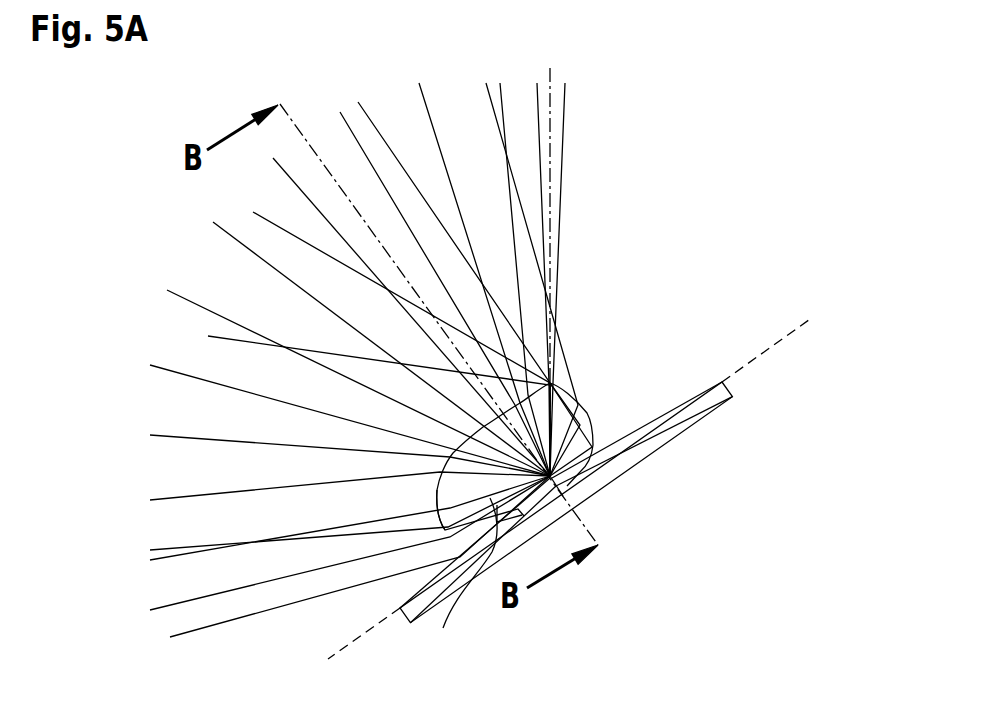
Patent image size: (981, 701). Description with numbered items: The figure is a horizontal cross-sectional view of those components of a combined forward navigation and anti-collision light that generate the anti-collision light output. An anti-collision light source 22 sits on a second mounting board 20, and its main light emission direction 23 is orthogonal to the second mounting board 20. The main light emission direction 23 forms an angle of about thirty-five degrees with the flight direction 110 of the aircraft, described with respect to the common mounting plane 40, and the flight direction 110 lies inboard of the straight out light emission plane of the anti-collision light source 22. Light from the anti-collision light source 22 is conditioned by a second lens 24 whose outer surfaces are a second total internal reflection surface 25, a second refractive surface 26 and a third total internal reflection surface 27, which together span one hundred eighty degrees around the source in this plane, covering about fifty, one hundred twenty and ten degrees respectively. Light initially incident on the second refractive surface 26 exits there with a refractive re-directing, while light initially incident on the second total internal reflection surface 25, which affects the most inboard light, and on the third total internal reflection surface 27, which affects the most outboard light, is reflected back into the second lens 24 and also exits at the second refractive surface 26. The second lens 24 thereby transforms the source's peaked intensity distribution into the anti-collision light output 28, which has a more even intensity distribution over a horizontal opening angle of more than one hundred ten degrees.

The second mounting board 20 is at (683, 432).
The anti-collision light source 22 is at (553, 480).
The main light emission direction 23 is at (297, 128).
The second lens 24 is at (461, 583).
The second total internal reflection surface 25 is at (583, 398).
The second refractive surface 26 is at (447, 472).
The third total internal reflection surface 27 is at (448, 522).
The anti-collision light output 28 is at (135, 205).
The common mounting plane 40 is at (782, 333).
The flight direction 110 is at (550, 70).